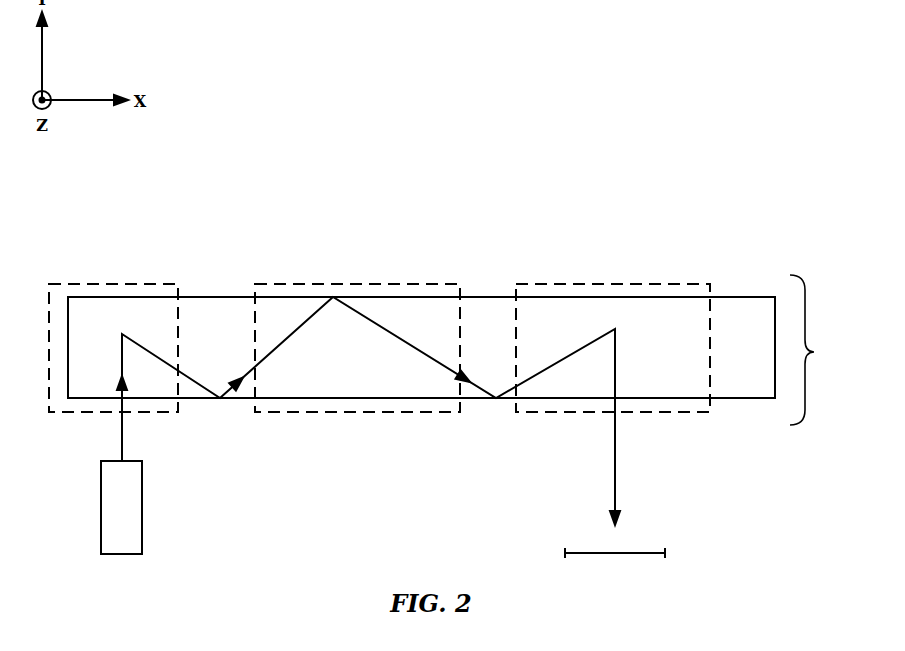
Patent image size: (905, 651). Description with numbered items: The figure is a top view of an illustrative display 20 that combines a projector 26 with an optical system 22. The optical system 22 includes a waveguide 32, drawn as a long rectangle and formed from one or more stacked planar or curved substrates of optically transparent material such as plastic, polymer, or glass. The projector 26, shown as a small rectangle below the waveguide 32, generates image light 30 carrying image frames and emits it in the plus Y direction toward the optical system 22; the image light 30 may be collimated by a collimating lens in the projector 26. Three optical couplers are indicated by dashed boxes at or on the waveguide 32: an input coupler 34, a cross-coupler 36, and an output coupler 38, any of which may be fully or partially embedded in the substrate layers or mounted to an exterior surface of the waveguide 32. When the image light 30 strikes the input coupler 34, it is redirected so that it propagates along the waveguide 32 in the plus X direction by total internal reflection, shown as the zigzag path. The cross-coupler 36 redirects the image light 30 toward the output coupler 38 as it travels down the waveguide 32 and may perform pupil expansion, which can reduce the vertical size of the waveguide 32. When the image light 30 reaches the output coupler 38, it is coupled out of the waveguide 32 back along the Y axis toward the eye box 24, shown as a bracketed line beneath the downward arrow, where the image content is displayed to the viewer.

The display 20 is at (493, 146).
The optical system 22 is at (814, 350).
The eye box 24 is at (665, 553).
The projector 26 is at (142, 503).
The image light 30 is at (122, 435).
The waveguide 32 is at (211, 296).
The input coupler 34 is at (127, 283).
The cross-coupler 36 is at (359, 283).
The output coupler 38 is at (623, 283).